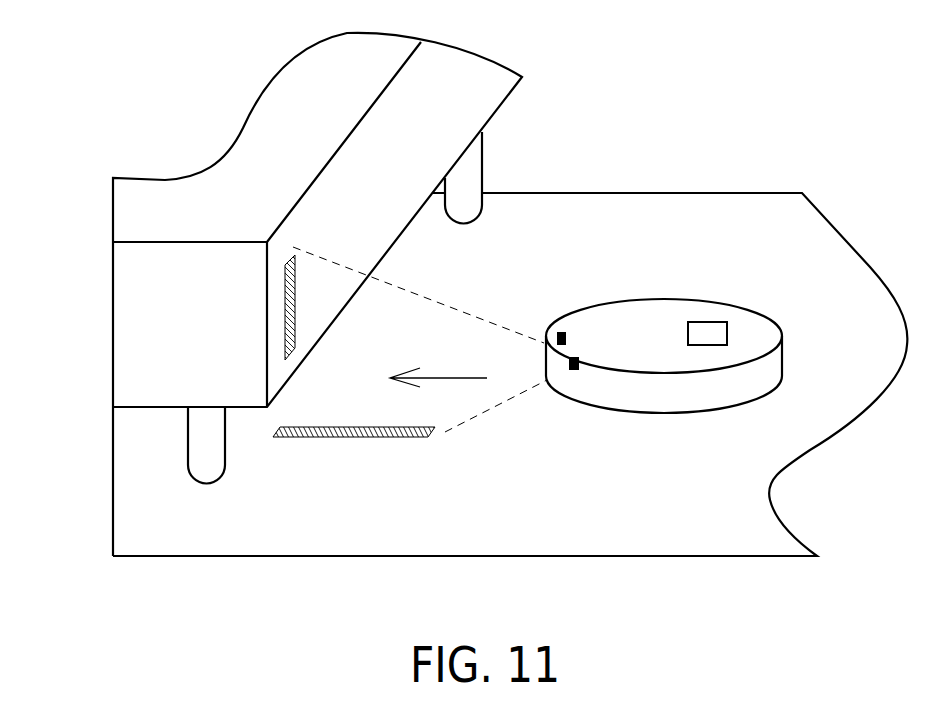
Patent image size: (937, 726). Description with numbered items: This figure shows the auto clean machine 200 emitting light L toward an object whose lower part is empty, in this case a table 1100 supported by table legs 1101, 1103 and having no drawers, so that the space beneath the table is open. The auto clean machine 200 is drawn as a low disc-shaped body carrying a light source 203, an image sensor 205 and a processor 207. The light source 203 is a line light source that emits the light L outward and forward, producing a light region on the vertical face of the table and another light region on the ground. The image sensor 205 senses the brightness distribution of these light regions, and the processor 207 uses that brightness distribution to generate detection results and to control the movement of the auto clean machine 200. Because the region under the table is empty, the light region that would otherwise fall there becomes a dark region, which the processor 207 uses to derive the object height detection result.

The table 1100 is at (462, 108).
The table leg 1101 is at (473, 172).
The table leg 1103 is at (208, 442).
The auto clean machine 200 is at (645, 333).
The light source 203 is at (575, 355).
The image sensor 205 is at (562, 328).
The processor 207 is at (707, 340).
The light L is at (438, 364).